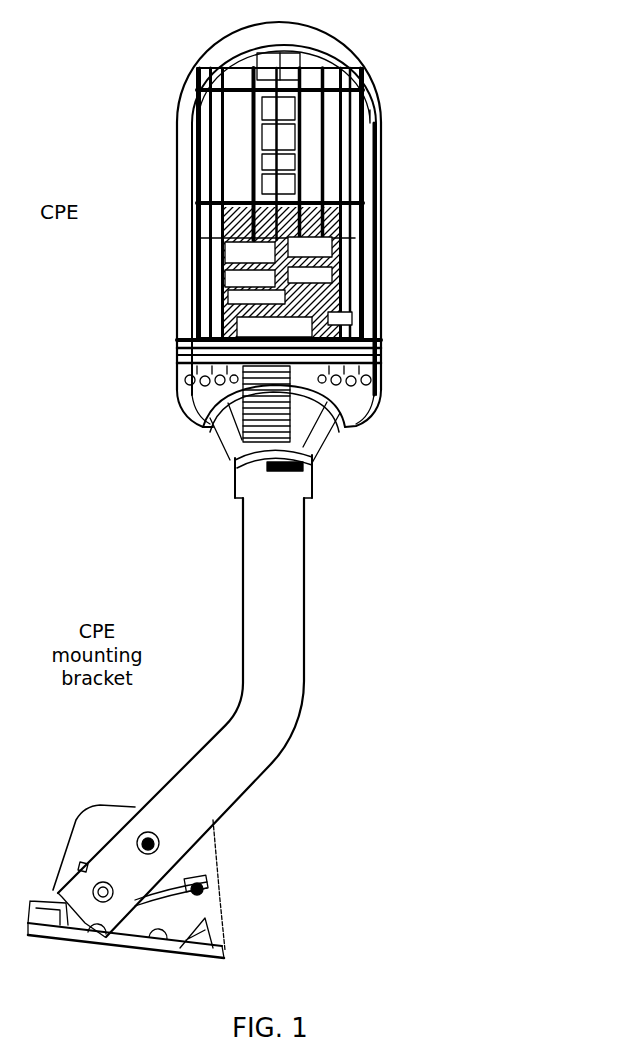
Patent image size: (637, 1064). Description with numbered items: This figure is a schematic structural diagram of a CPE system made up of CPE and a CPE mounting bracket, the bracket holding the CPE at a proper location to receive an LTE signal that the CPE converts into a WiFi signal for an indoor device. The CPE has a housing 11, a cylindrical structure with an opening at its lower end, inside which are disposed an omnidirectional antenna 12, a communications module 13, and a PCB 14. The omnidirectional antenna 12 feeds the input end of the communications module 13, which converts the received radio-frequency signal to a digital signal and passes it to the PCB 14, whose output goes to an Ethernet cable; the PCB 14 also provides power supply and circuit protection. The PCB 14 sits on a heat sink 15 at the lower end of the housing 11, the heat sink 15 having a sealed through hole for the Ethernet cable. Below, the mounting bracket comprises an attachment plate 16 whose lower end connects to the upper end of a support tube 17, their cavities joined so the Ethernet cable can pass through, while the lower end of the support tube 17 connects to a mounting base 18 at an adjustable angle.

The housing 11 is at (392, 113).
The omnidirectional antenna 12 is at (371, 172).
The communications module 13 is at (298, 304).
The PCB 14 is at (365, 330).
The heat sink 15 is at (371, 357).
The attachment plate 16 is at (358, 435).
The support tube 17 is at (318, 605).
The mounting base 18 is at (194, 915).